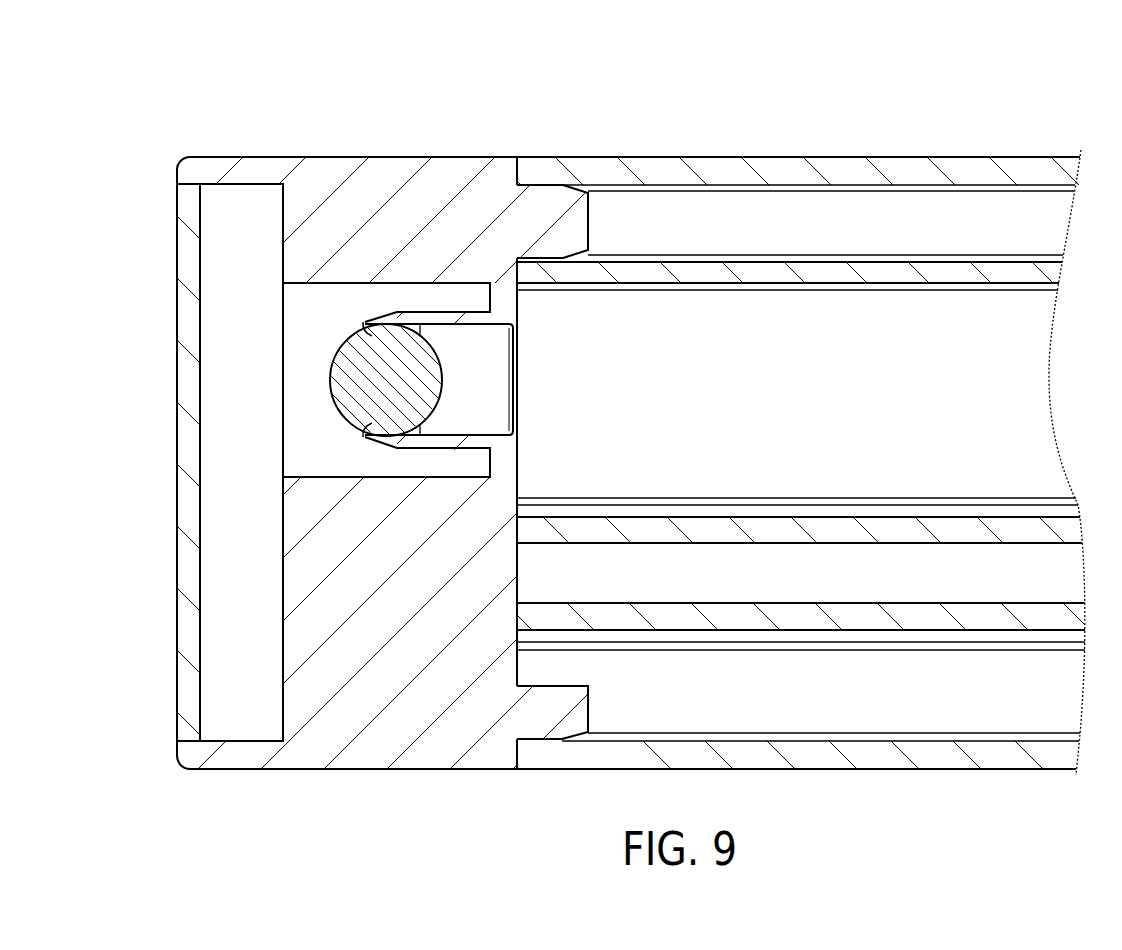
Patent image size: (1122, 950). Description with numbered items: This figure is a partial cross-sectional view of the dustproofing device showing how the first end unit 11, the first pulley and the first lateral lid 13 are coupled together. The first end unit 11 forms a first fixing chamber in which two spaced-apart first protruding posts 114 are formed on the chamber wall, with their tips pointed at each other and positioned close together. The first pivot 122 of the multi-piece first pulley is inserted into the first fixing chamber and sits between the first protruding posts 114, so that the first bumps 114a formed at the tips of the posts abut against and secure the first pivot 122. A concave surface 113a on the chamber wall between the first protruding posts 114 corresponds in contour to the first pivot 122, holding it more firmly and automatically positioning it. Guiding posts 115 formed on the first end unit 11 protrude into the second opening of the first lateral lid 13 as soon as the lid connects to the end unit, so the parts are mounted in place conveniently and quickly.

The first end unit 11 is at (290, 157).
The first lateral lid 13 is at (793, 157).
The concave surface 113a is at (437, 350).
The first protruding posts 114 is at (410, 313).
The first bumps 114a is at (335, 357).
The guiding posts 115 is at (555, 208).
The first pivot 122 is at (360, 385).